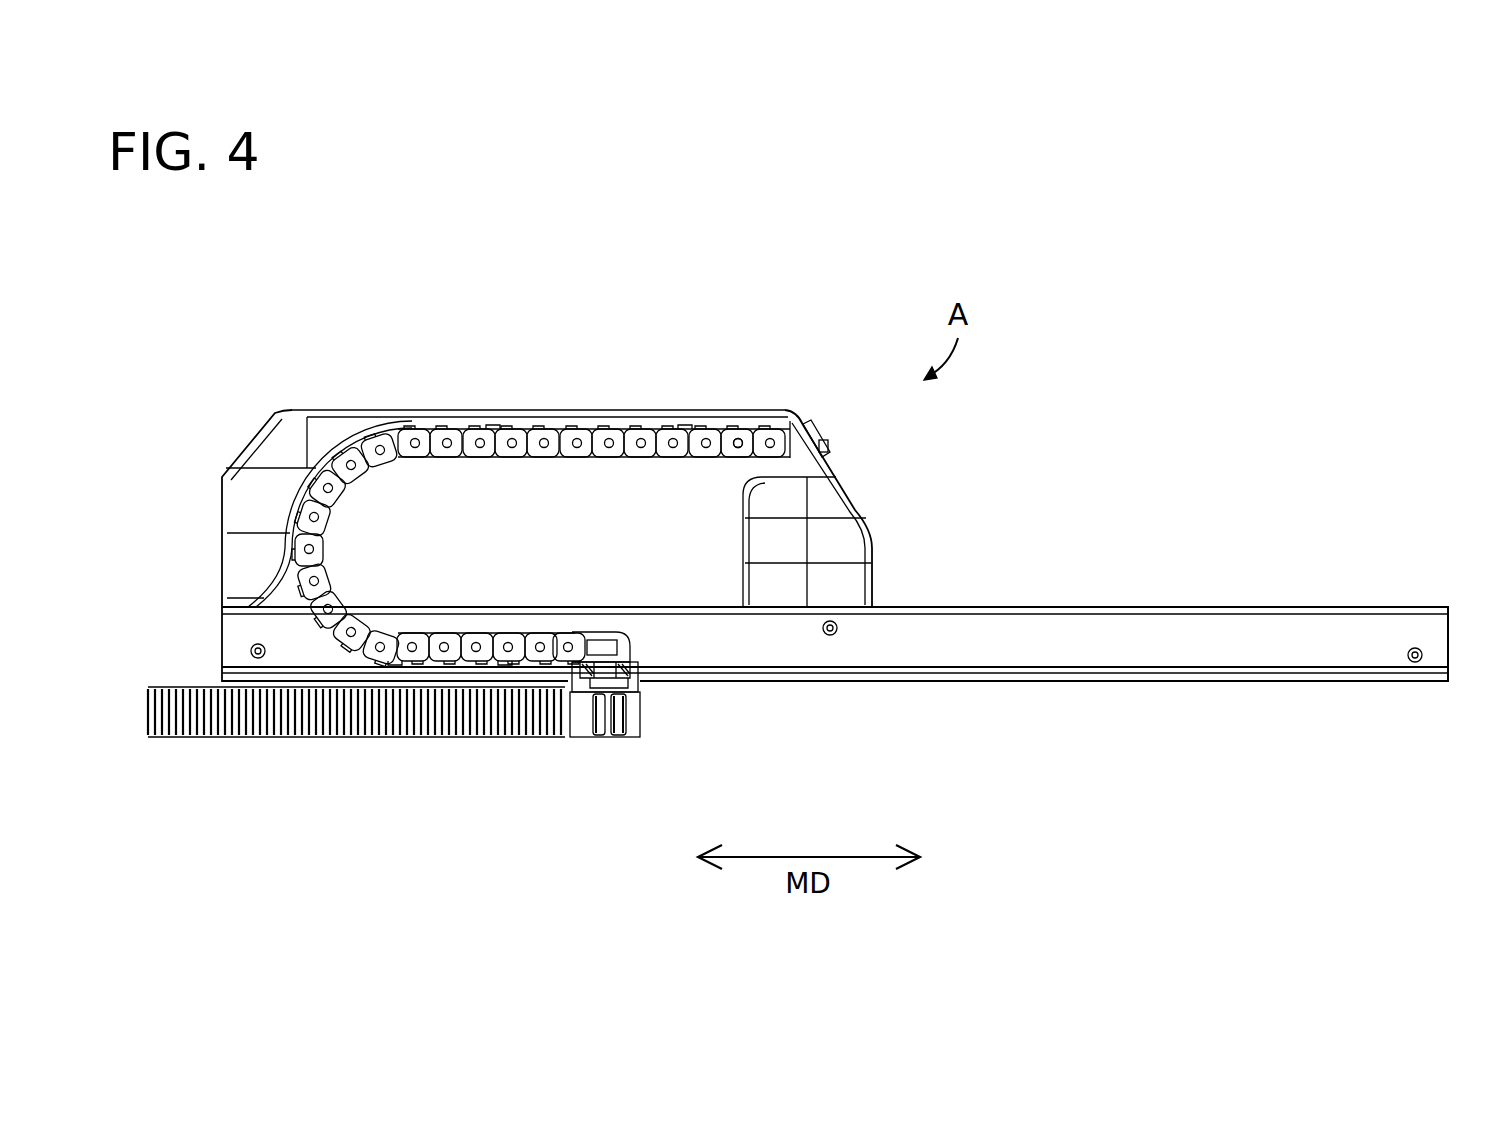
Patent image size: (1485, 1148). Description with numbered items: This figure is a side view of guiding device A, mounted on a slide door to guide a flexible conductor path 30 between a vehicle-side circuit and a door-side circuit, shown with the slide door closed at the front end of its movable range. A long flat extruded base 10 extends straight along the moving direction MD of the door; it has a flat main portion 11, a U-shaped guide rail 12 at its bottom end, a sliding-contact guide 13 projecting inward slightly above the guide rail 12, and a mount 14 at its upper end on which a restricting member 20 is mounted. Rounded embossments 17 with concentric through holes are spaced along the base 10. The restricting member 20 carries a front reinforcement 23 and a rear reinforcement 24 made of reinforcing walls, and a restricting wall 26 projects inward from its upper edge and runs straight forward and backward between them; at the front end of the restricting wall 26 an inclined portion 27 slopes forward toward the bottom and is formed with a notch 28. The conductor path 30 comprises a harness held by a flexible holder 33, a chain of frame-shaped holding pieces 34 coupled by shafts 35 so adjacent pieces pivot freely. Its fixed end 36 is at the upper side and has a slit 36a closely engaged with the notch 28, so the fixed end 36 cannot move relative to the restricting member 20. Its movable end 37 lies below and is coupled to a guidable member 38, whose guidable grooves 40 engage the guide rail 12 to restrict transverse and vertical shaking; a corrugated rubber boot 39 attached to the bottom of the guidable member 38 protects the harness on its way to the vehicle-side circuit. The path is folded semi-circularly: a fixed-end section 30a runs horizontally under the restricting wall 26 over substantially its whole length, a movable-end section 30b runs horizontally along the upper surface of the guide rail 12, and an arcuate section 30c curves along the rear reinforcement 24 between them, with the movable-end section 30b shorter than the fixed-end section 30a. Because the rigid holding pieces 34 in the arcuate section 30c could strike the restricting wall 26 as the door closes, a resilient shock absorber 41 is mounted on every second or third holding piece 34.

The base 10 is at (963, 690).
The main portion 11 is at (1103, 643).
The guide rail 12 is at (1172, 680).
The sliding-contact guide 13 is at (1206, 667).
The mount 14 is at (1142, 607).
The embossment 17 is at (266, 656).
The restricting member 20 is at (528, 495).
The front reinforcement 23 is at (810, 547).
The rear reinforcement 24 is at (291, 478).
The restricting wall 26 is at (648, 410).
The inclined portion 27 is at (832, 462).
The notch 28 is at (820, 456).
The conductor path 30 is at (450, 422).
The fixed-end section 30a is at (569, 415).
The movable-end section 30b is at (466, 655).
The arcuate section 30c is at (277, 527).
The flexible holder 33 is at (675, 478).
The holding piece 34 is at (692, 443).
The shaft 35 is at (740, 443).
The fixed end 36 is at (790, 443).
The slit 36a is at (826, 444).
The movable end 37 is at (550, 655).
The guidable member 38 is at (640, 665).
The corrugated rubber boot 39 is at (357, 718).
The guidable groove 40 is at (640, 673).
The shock absorber 41 is at (493, 430).